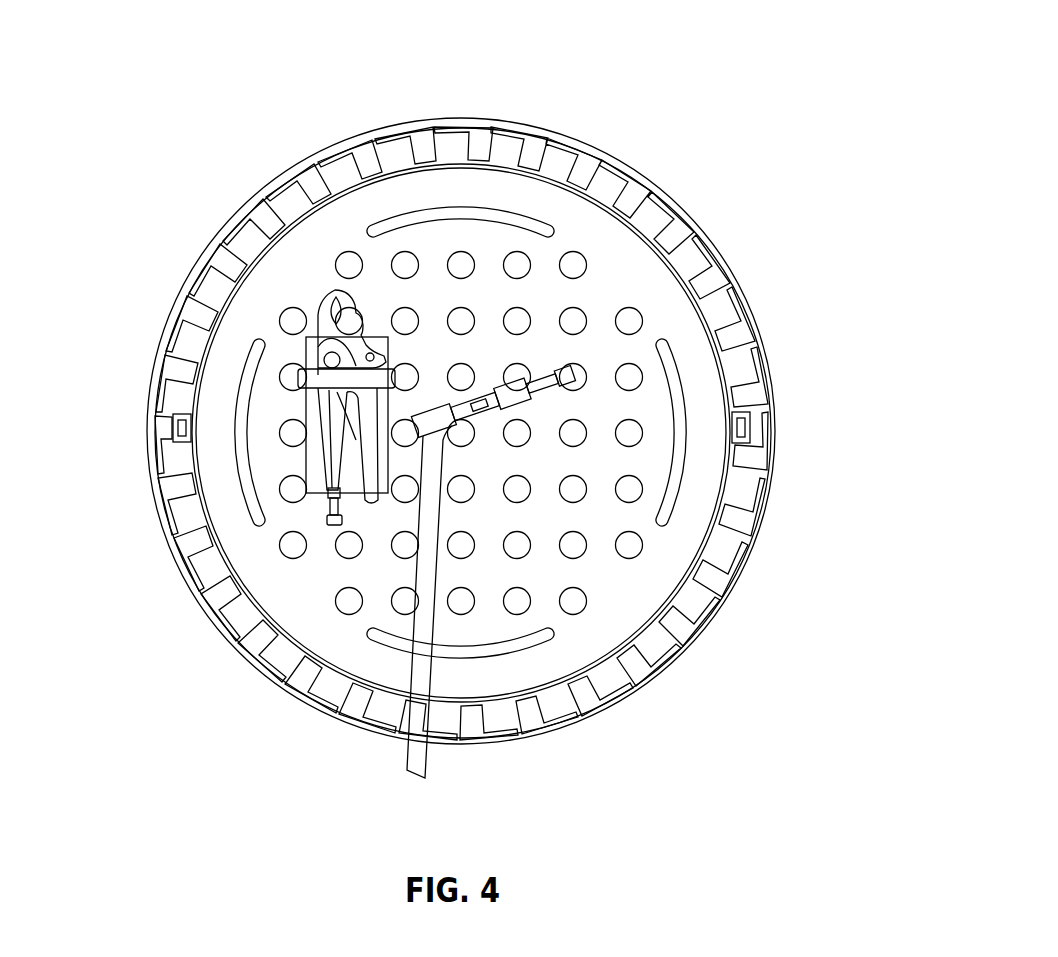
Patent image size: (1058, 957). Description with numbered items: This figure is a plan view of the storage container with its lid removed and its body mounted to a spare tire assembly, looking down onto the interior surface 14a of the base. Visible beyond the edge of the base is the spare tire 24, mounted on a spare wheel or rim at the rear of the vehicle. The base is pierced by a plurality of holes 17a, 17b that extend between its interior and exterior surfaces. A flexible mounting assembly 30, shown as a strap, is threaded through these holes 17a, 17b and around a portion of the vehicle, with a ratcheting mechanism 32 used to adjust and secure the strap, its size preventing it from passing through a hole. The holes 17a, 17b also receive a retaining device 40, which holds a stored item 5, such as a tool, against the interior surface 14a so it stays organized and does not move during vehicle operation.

The interior surface 14a is at (313, 260).
The spare tire 24 is at (609, 152).
The holes 17a is at (405, 423).
The holes 17b is at (235, 453).
The items 5 is at (318, 307).
The retaining device 40 is at (306, 356).
The mounting assembly 30 is at (430, 720).
The ratcheting mechanism 32 is at (507, 421).